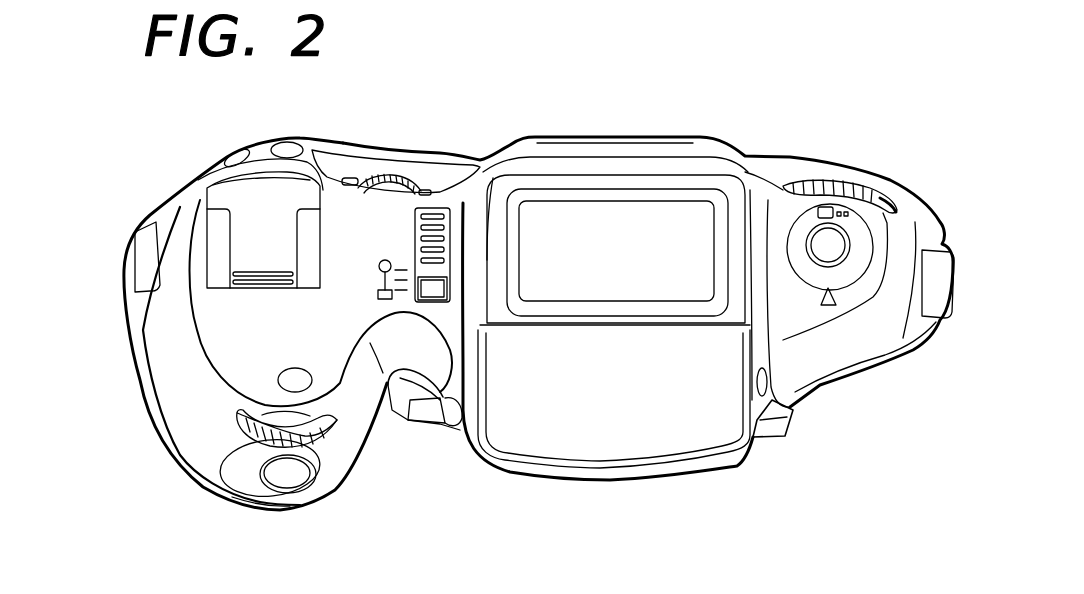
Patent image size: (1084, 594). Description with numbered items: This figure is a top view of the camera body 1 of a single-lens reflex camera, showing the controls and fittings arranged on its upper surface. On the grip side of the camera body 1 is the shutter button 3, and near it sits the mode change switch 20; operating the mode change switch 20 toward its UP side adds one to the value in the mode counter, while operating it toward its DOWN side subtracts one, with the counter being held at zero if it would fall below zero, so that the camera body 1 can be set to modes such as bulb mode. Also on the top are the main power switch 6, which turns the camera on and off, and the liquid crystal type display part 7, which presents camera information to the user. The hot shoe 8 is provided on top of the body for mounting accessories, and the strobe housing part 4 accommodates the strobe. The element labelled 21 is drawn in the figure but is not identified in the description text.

The camera body 1 is at (755, 133).
The shutter button 3 is at (290, 480).
The strobe housing part 4 is at (667, 432).
The main power switch 6 is at (440, 213).
The liquid crystal type display part 7 is at (622, 218).
The hot shoe 8 is at (284, 197).
The mode change switch 20 is at (333, 433).
The button 21 is at (280, 381).